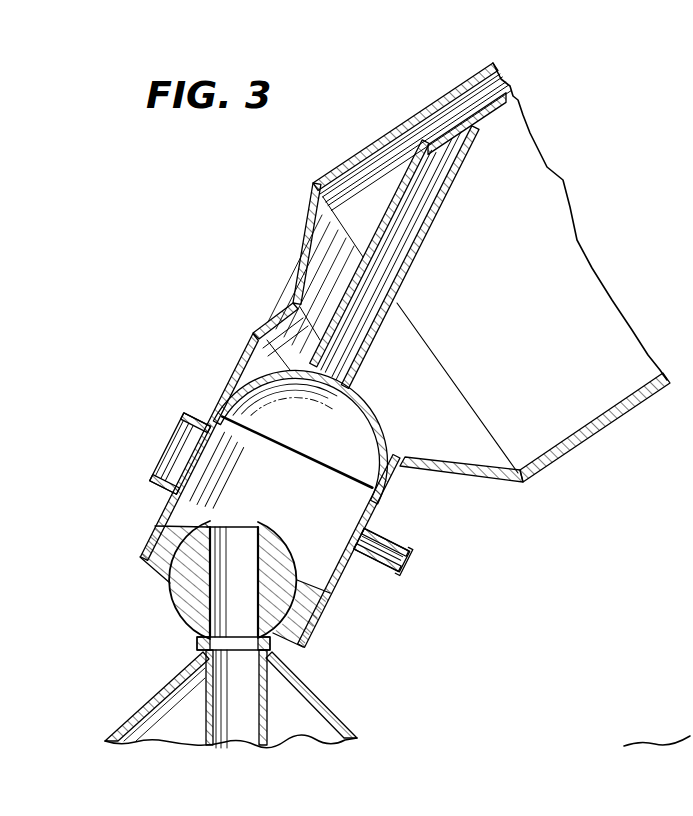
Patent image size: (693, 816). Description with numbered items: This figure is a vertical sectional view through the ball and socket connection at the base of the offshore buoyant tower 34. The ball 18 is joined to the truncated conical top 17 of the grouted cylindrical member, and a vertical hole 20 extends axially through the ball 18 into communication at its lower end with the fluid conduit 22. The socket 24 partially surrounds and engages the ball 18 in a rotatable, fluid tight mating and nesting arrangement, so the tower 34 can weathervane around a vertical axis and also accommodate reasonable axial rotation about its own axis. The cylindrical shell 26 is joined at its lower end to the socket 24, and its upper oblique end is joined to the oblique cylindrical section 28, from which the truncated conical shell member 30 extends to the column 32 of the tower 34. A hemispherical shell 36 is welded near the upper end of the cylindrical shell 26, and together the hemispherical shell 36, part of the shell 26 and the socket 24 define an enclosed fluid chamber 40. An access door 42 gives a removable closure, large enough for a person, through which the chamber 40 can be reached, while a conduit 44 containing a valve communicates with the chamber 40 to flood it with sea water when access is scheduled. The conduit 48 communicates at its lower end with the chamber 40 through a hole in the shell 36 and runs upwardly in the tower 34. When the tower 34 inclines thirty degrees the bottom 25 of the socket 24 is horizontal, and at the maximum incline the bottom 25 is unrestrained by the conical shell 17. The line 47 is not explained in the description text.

The truncated conical top 17 is at (323, 703).
The ball 18 is at (172, 598).
The vertical hole 20 is at (230, 597).
The fluid conduit 22 is at (266, 730).
The socket 24 is at (300, 623).
The bottom of socket 25 is at (160, 580).
The cylindrical shell 26 is at (374, 501).
The oblique cylindrical section 28 is at (277, 320).
The truncated conical shell member 30 is at (467, 477).
The column 32 is at (570, 447).
The offshore tower 34 is at (442, 80).
The hemispherical shell 36 is at (263, 380).
The fluid chamber 40 is at (231, 492).
The access door 42 is at (180, 440).
The conduit 44 is at (390, 573).
The tube 47 is at (343, 389).
The conduit 48 is at (437, 210).